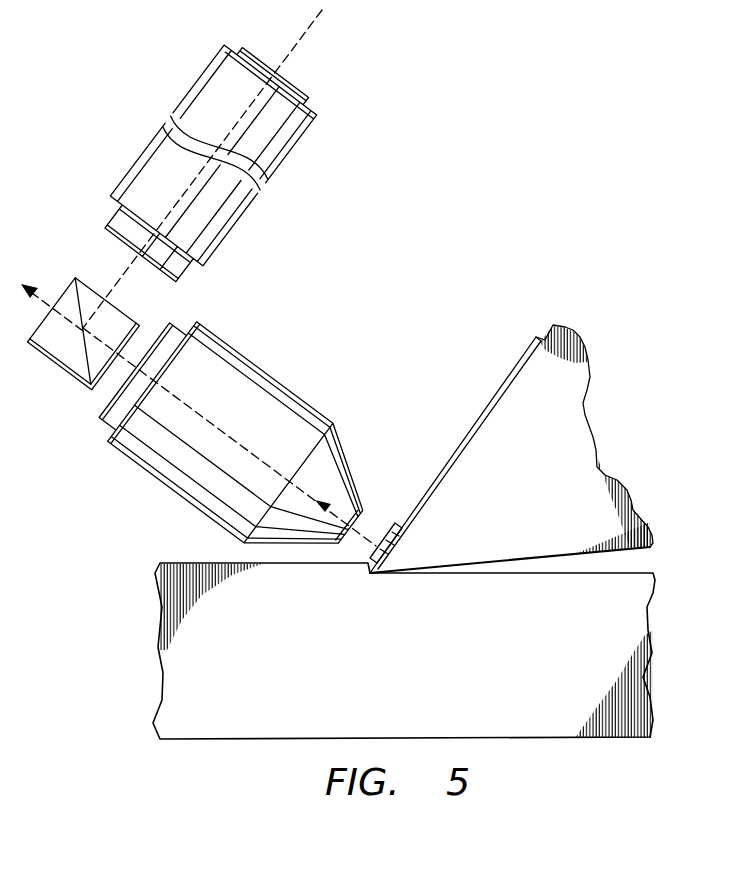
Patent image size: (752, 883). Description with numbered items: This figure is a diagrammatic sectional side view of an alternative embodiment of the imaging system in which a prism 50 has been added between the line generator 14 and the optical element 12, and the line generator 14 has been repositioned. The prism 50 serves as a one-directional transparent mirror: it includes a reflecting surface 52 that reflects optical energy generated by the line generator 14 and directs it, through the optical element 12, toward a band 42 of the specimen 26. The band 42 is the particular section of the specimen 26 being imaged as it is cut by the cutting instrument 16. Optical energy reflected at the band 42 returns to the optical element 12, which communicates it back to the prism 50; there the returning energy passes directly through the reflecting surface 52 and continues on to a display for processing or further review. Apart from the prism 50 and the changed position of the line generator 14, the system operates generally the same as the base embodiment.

The line generator 14 is at (202, 76).
The prism 50 is at (68, 292).
The reflecting surface 52 is at (78, 362).
The optical element 12 is at (263, 371).
The band 42 is at (392, 526).
The cutting instrument 16 is at (571, 417).
The specimen 26 is at (229, 742).